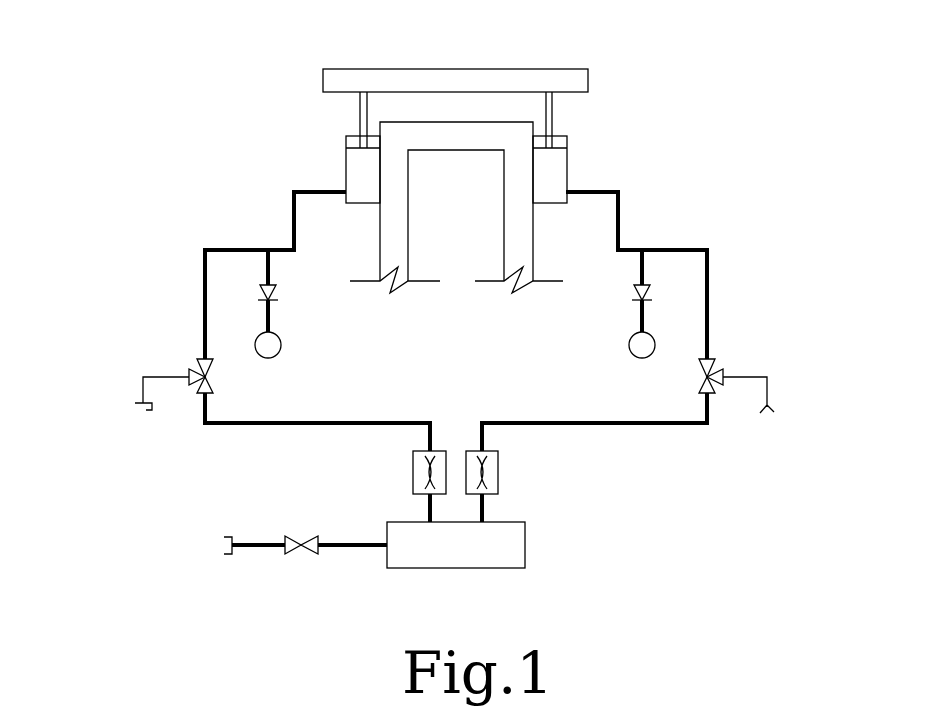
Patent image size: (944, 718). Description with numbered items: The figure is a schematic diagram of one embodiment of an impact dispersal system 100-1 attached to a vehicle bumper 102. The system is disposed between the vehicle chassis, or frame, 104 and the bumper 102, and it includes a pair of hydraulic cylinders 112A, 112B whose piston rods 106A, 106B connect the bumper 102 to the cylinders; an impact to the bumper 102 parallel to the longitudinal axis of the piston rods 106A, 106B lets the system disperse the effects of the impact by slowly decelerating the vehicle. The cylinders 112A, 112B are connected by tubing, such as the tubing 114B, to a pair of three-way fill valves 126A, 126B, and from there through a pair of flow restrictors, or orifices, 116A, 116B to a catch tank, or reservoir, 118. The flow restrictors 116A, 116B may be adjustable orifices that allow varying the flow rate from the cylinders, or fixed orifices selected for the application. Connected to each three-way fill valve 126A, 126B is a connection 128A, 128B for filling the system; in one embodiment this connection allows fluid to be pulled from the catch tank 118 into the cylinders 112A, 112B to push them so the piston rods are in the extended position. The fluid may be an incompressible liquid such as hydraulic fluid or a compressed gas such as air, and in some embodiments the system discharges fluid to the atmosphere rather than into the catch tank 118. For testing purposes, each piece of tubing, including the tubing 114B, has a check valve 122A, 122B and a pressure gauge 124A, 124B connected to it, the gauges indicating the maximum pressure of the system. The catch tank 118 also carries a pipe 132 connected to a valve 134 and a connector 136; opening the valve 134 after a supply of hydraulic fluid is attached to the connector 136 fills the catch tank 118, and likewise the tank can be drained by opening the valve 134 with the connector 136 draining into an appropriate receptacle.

The impact dispersal system 100-1 is at (748, 107).
The vehicle bumper 102 is at (510, 70).
The vehicle chassis 104 is at (433, 150).
The piston rod 106A is at (360, 110).
The piston rod 106B is at (552, 110).
The hydraulic cylinder 112A is at (346, 165).
The hydraulic cylinder 112B is at (567, 165).
The tubing 114B is at (708, 408).
The flow restrictor 116A is at (413, 470).
The flow restrictor 116B is at (498, 470).
The catch tank 118 is at (525, 543).
The check valve 122A is at (280, 288).
The check valve 122B is at (630, 288).
The pressure gauge 124A is at (282, 345).
The pressure gauge 124B is at (628, 345).
The three-way fill valve 126A is at (198, 364).
The three-way fill valve 126B is at (714, 364).
The connection 128A is at (136, 405).
The connection 128B is at (772, 407).
The pipe 132 is at (352, 543).
The valve 134 is at (296, 552).
The connector 136 is at (226, 550).